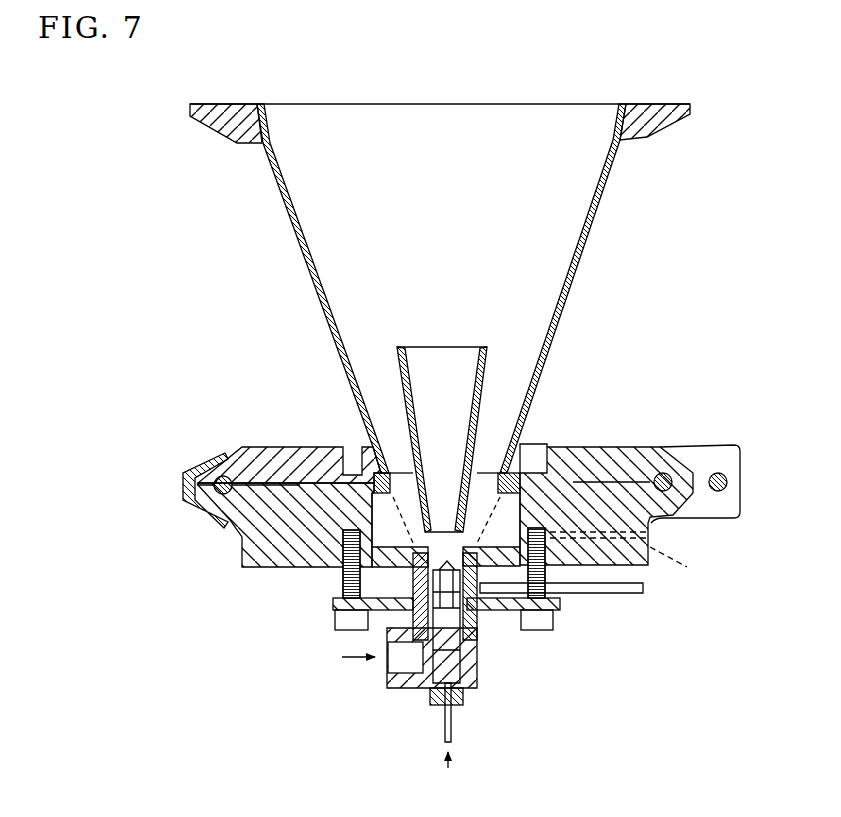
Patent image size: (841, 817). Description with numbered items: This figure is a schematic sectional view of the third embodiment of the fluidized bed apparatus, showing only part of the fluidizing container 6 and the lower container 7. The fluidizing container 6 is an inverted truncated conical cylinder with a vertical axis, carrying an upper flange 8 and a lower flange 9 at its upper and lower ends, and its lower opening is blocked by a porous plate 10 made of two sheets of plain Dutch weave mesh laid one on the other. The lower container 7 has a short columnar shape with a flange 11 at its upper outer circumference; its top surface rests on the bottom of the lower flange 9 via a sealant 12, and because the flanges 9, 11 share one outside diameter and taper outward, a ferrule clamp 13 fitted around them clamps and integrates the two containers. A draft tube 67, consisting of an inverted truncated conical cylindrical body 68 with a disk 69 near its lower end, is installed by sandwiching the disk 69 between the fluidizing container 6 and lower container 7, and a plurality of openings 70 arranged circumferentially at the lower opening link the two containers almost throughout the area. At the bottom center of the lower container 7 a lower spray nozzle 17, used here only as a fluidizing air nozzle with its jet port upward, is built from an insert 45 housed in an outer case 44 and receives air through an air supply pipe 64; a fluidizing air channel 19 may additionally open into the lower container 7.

The fluidizing container 6 is at (582, 267).
The lower container 7 is at (651, 570).
The upper flange 8 is at (660, 127).
The lower flange 9 is at (624, 455).
The porous plate 10 is at (383, 524).
The flange of lower container 11 is at (684, 497).
The sealant 12 is at (679, 477).
The ferrule clamp 13 is at (202, 465).
The lower spray nozzle 17 is at (484, 701).
The fluidizing air channel 19 is at (661, 537).
The outer case 44 is at (476, 643).
The insert 45 is at (424, 655).
The air supply pipe 64 is at (610, 593).
The draft tube 67 is at (498, 377).
The cylindrical body 68 is at (396, 362).
The disk 69 is at (372, 445).
The openings 70 is at (487, 477).